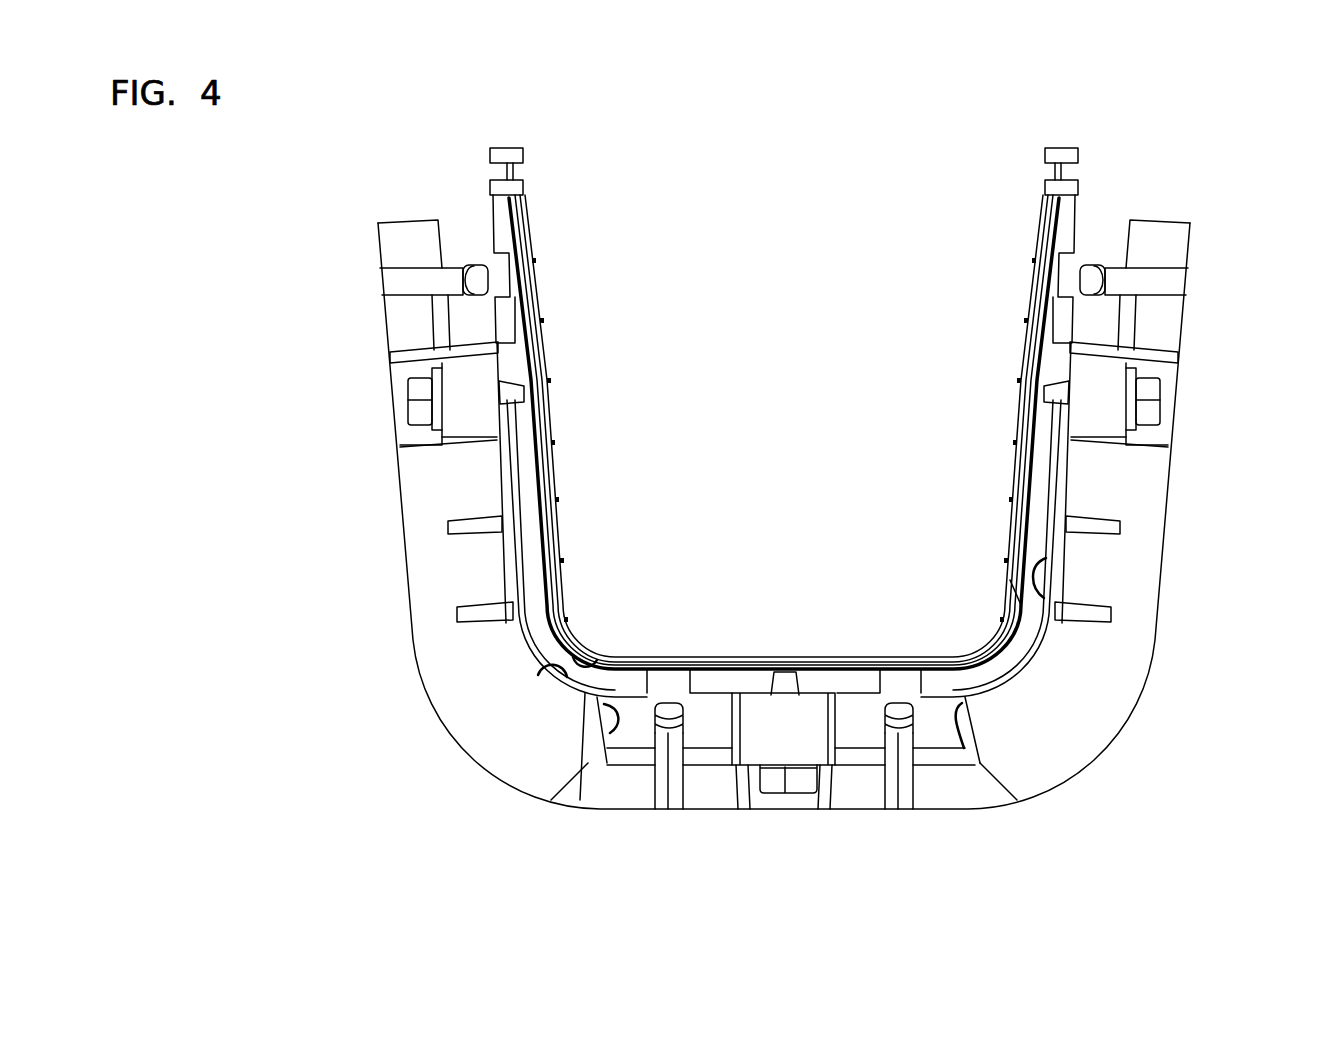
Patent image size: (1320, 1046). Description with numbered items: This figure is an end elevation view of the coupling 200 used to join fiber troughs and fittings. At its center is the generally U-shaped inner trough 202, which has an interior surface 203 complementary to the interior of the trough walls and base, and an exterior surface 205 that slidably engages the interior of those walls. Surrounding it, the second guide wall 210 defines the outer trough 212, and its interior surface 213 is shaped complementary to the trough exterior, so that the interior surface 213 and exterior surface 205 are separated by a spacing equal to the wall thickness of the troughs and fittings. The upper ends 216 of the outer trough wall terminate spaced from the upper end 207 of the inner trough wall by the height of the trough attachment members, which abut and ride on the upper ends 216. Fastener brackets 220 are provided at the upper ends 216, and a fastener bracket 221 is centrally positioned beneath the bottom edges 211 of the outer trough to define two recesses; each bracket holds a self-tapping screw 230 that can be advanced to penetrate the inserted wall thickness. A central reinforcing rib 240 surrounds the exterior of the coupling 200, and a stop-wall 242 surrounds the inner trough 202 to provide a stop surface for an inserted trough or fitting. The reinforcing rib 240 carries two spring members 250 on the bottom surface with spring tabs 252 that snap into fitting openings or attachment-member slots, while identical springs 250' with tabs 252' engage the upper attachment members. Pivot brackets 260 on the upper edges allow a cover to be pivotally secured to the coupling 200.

The coupling 200 is at (633, 338).
The inner trough 202 is at (1005, 473).
The interior surface 203 is at (1010, 580).
The exterior surface 205 is at (608, 672).
The upper end of the inner trough wall 207 is at (520, 197).
The second guide wall 210 is at (1063, 487).
The bottom edges of the outer trough 211 is at (610, 733).
The outer trough 212 is at (533, 573).
The interior surface 213 is at (567, 683).
The upper ends of the outer trough wall 216 is at (1185, 227).
The fastener bracket 220 is at (475, 418).
The fastener bracket 221 is at (798, 747).
The self-tapping screw 230 is at (415, 412).
The central reinforcing rib 240 is at (443, 643).
The stop-wall 242 is at (523, 497).
The spring member 250 is at (796, 807).
The spring 250' is at (788, 219).
The spring tab 252 is at (755, 791).
The tab 252' is at (794, 200).
The pivot bracket 260 is at (513, 155).